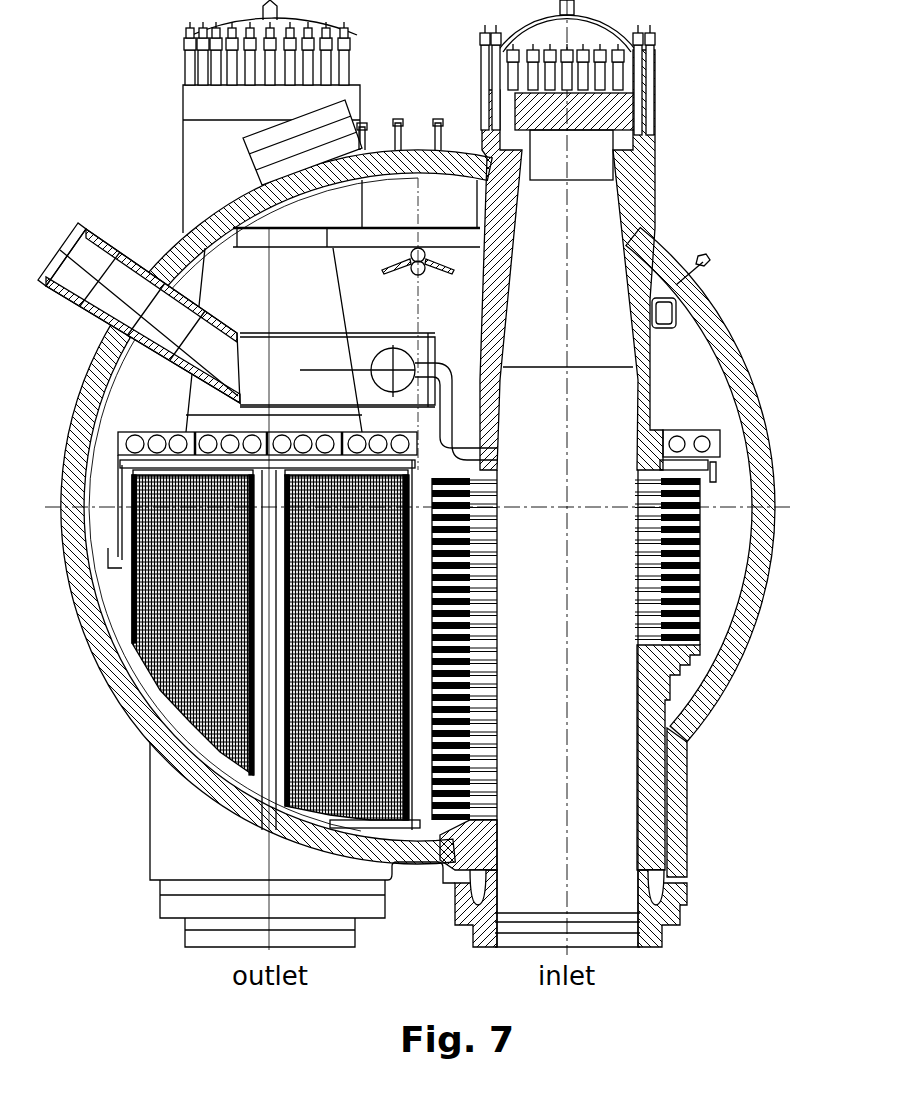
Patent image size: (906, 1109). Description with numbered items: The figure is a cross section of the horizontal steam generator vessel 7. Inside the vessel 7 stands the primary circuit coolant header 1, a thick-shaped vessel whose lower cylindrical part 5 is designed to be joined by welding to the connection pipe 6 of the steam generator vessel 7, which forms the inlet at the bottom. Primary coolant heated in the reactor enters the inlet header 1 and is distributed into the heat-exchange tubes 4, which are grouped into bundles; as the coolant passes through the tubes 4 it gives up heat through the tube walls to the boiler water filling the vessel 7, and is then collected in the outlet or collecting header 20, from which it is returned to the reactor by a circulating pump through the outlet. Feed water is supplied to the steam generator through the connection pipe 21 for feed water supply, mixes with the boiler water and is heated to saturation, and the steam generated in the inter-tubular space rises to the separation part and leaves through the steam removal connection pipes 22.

The primary circuit coolant header 1 is at (590, 243).
The heat-exchange tube 4 is at (697, 600).
The lower cylindrical part of the header 5 is at (690, 900).
The connection pipe 6 is at (688, 807).
The steam generator vessel 7 is at (738, 382).
The outlet header 20 is at (207, 182).
The connection pipe for feed water supply 21 is at (88, 222).
The steam removal connection pipe 22 is at (330, 147).